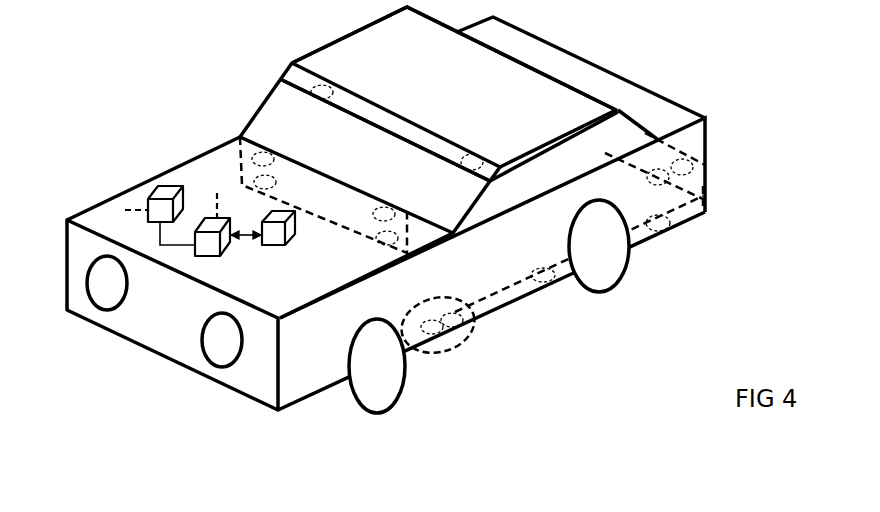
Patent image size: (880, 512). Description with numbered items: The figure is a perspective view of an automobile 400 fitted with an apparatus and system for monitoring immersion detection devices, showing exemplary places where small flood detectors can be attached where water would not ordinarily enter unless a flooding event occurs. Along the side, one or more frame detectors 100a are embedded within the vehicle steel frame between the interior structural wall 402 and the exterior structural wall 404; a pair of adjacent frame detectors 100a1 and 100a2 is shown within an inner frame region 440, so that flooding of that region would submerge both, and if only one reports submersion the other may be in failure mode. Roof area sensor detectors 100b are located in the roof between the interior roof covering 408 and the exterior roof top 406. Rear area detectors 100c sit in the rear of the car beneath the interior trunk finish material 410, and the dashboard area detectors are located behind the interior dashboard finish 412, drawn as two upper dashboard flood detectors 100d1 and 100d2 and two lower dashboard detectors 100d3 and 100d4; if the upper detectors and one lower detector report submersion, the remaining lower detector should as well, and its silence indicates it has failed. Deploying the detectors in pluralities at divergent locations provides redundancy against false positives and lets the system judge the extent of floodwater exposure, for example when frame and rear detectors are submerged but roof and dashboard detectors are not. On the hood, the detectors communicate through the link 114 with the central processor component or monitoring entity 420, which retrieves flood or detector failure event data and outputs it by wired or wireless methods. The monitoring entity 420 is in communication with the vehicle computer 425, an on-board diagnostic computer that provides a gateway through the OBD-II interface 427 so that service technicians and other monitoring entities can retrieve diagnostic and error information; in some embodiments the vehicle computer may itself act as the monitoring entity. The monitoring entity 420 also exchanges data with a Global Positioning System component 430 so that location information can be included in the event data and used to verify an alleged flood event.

The automobile 400 is at (130, 68).
The interior structural wall 402 is at (688, 222).
The exterior structural wall 404 is at (640, 244).
The exterior roof top 406 is at (296, 62).
The interior roof covering 408 is at (285, 80).
The interior trunk finish material 410 is at (673, 186).
The interior dashboard finish 412 is at (242, 157).
The vehicle computer 425 is at (147, 198).
The OBD-II interface 427 is at (125, 210).
The link 114 is at (216, 195).
The central processor component or monitoring entity 420 is at (210, 253).
The Global Positioning System (GPS) component 430 is at (277, 247).
The inner frame region 440 is at (407, 315).
The roof area sensor detector 100b is at (333, 90).
The upper dashboard flood detector 100d1 is at (259, 152).
The upper dashboard flood detector 100d2 is at (397, 220).
The lower dashboard detector 100d3 is at (277, 180).
The lower dashboard detector 100d4 is at (383, 245).
The frame detector 100a1 is at (466, 323).
The frame detector 100a2 is at (467, 343).
The rear area detector 100c is at (680, 157).
The frame detector 100a is at (660, 232).